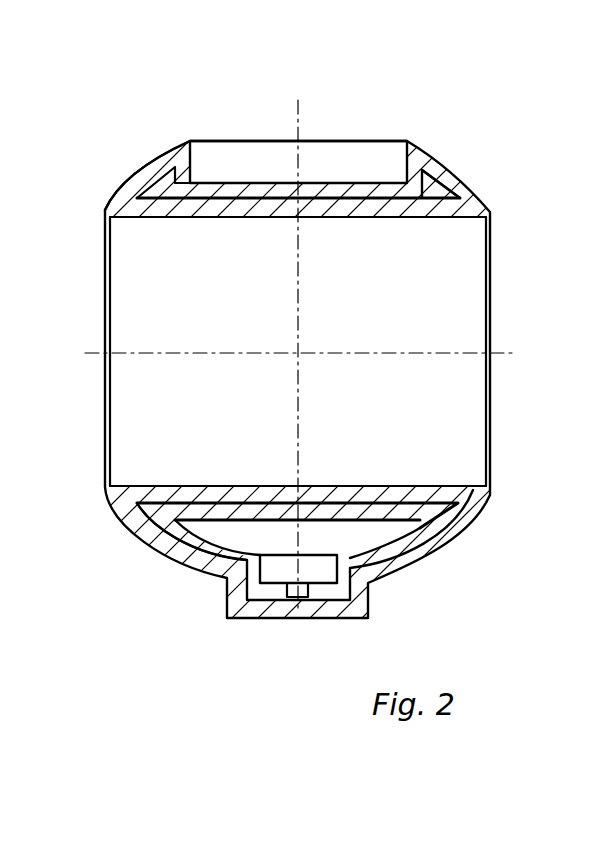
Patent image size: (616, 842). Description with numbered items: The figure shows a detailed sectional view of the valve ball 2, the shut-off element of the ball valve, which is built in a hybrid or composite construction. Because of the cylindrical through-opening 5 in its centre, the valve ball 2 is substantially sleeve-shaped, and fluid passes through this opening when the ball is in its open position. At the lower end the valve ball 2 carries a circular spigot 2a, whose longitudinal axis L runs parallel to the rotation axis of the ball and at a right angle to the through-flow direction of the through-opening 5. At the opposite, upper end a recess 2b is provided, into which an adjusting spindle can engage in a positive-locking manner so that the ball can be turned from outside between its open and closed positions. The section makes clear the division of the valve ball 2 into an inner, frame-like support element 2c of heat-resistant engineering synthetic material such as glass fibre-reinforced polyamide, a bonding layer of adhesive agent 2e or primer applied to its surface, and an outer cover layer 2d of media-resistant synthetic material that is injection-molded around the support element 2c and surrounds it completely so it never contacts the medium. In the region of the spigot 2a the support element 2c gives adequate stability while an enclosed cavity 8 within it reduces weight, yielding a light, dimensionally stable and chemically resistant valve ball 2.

The valve ball 2 is at (496, 561).
The spigot 2a is at (245, 600).
The recess 2b is at (348, 163).
The support element 2c is at (273, 593).
The cover layer 2d is at (145, 175).
The adhesive agent 2e is at (460, 180).
The through-opening 5 is at (450, 282).
The cavity 8 is at (462, 537).
The longitudinal axis L is at (298, 313).